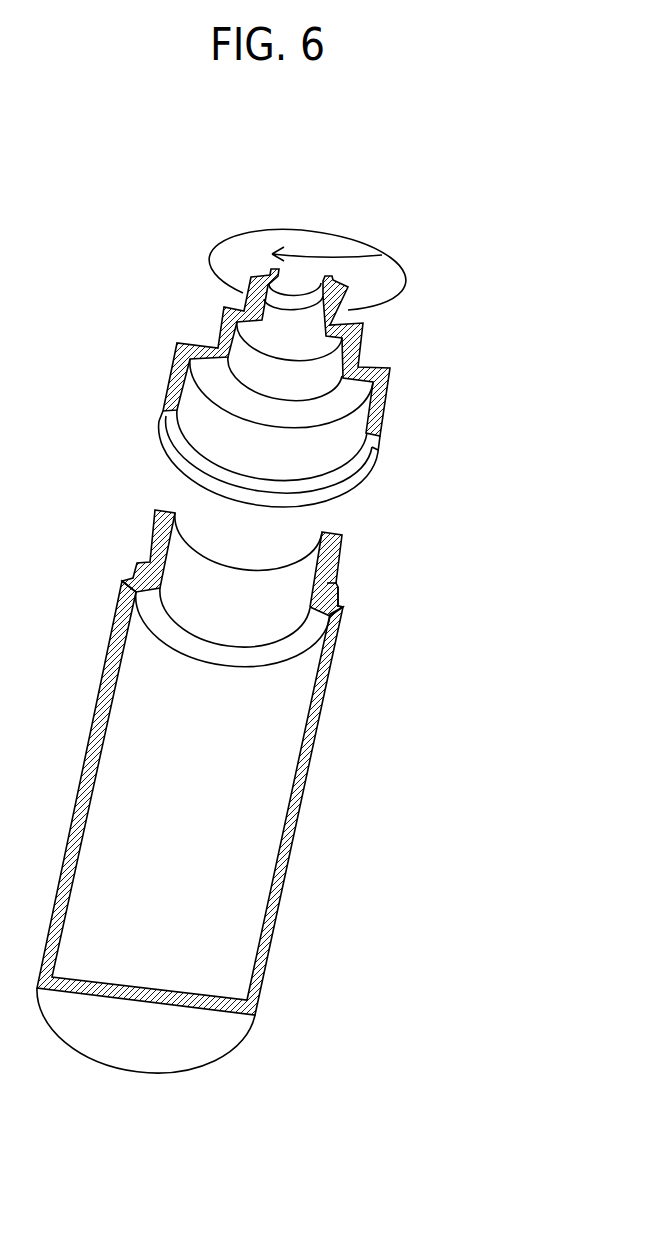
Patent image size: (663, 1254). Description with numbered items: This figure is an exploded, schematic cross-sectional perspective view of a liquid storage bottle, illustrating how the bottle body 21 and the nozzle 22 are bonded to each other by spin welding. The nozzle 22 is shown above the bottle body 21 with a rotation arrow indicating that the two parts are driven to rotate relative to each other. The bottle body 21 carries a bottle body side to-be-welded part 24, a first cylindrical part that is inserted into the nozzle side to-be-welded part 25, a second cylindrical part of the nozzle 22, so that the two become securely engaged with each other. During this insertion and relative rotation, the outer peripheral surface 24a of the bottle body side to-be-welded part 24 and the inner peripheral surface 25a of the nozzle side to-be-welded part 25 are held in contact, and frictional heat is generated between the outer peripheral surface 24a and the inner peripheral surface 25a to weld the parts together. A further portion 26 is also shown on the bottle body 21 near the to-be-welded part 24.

The bottle body 21 is at (253, 790).
The nozzle 22 is at (300, 367).
The bottle body side to-be-welded part 24 is at (132, 508).
The outer peripheral surface 24a is at (336, 584).
The nozzle side to-be-welded part 25 is at (152, 342).
The inner peripheral surface 25a is at (331, 446).
The engaging step portion 26 is at (339, 588).